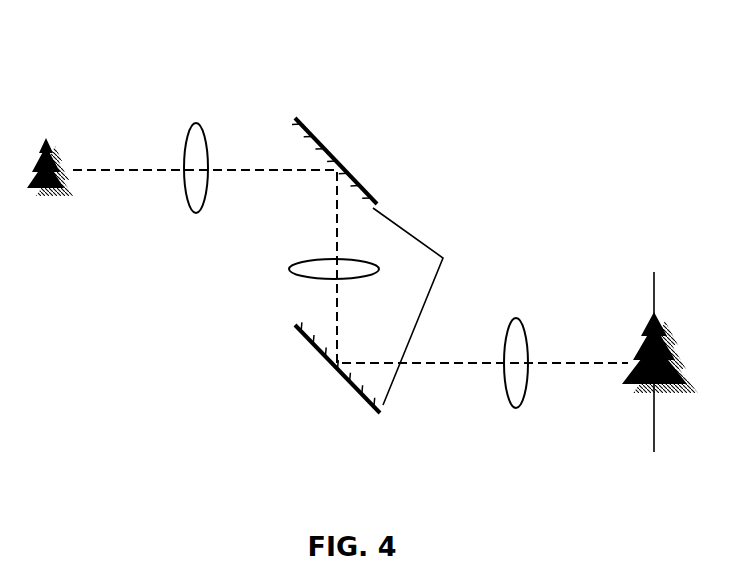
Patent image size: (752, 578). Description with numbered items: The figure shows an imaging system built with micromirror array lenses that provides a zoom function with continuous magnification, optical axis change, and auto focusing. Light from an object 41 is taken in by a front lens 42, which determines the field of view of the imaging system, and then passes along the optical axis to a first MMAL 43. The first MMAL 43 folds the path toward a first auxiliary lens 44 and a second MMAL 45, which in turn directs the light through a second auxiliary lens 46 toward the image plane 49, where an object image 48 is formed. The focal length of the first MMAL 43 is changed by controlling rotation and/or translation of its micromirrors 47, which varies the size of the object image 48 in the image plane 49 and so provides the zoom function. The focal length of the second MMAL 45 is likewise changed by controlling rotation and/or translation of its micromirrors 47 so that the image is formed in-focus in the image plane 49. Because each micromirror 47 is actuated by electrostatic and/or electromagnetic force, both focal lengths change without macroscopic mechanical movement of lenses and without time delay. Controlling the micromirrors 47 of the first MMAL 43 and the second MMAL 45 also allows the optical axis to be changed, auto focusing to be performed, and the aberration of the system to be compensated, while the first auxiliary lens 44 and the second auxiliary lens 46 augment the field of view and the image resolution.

The object 41 is at (52, 127).
The front lens 42 is at (200, 122).
The first MMAL 43 is at (332, 148).
The first auxiliary lens 44 is at (287, 275).
The second MMAL 45 is at (330, 367).
The second auxiliary lens 46 is at (510, 405).
The micromirrors 47 is at (426, 306).
The object image 48 is at (633, 390).
The image plane 49 is at (662, 277).